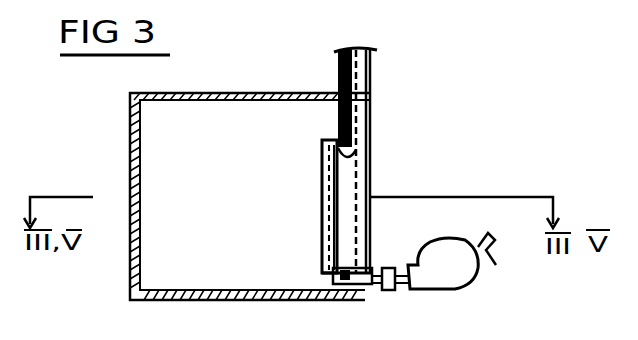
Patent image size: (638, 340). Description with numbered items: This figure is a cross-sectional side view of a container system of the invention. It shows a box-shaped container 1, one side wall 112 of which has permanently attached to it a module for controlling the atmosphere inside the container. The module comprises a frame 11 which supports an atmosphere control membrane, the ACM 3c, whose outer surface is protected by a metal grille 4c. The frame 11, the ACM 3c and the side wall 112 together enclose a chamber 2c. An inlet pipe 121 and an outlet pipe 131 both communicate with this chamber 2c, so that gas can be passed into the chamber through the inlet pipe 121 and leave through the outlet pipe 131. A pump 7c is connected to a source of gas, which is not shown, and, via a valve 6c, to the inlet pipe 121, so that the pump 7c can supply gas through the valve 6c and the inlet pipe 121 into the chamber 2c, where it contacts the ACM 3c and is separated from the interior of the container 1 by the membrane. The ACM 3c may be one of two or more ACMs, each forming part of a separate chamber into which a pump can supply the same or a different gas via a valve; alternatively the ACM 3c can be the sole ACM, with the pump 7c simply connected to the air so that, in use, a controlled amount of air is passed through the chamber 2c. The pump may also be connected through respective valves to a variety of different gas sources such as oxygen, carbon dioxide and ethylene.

The container 1 is at (216, 95).
The outlet pipe 131 is at (360, 78).
The frame 11 is at (362, 157).
The side wall 112 is at (373, 194).
The metal grille 4c is at (320, 183).
The ACM 3c is at (336, 199).
The chamber 2c is at (337, 233).
The inlet pipe 121 is at (337, 297).
The valve 6c is at (384, 293).
The pump 7c is at (452, 283).